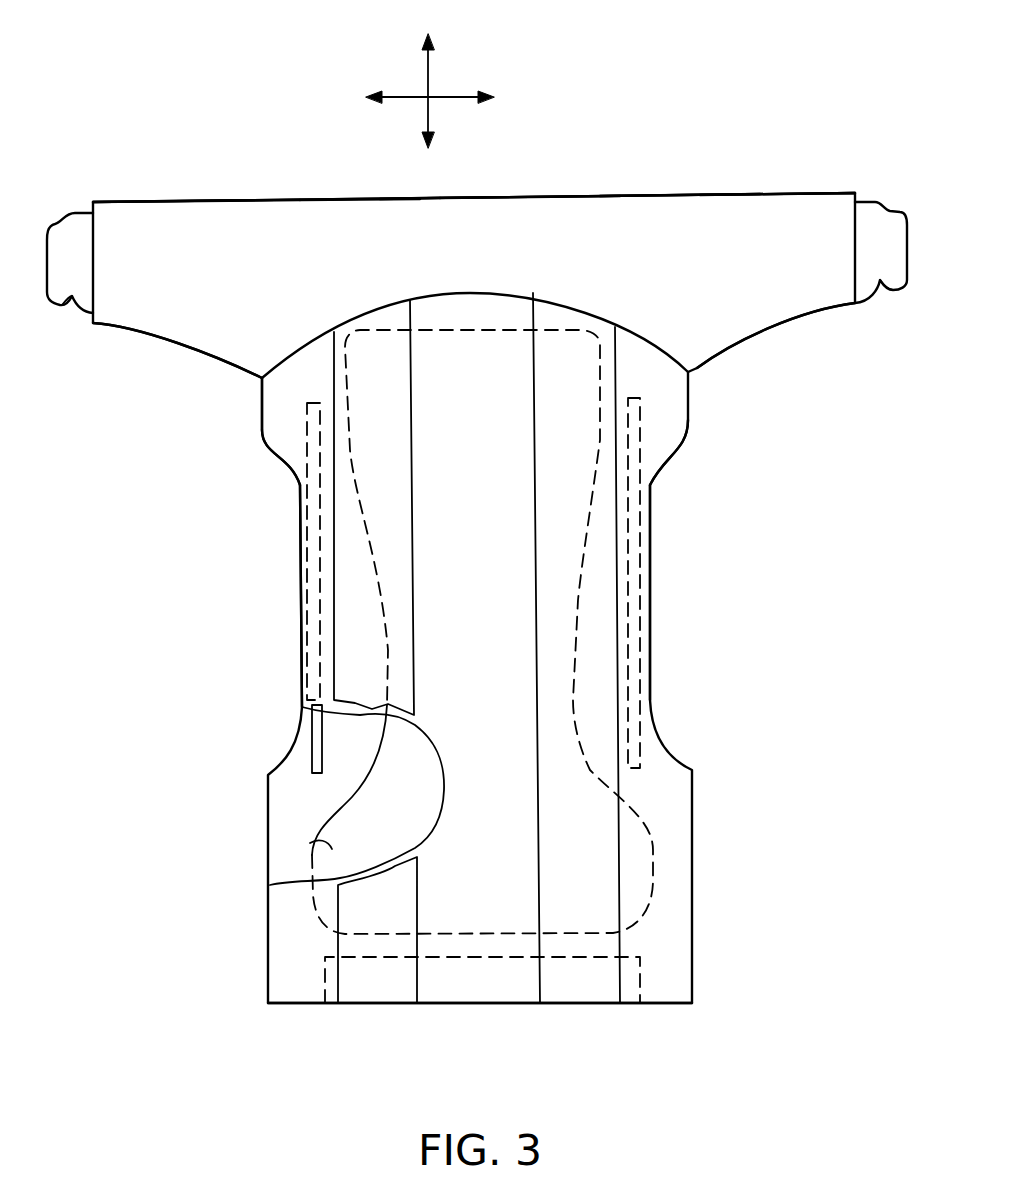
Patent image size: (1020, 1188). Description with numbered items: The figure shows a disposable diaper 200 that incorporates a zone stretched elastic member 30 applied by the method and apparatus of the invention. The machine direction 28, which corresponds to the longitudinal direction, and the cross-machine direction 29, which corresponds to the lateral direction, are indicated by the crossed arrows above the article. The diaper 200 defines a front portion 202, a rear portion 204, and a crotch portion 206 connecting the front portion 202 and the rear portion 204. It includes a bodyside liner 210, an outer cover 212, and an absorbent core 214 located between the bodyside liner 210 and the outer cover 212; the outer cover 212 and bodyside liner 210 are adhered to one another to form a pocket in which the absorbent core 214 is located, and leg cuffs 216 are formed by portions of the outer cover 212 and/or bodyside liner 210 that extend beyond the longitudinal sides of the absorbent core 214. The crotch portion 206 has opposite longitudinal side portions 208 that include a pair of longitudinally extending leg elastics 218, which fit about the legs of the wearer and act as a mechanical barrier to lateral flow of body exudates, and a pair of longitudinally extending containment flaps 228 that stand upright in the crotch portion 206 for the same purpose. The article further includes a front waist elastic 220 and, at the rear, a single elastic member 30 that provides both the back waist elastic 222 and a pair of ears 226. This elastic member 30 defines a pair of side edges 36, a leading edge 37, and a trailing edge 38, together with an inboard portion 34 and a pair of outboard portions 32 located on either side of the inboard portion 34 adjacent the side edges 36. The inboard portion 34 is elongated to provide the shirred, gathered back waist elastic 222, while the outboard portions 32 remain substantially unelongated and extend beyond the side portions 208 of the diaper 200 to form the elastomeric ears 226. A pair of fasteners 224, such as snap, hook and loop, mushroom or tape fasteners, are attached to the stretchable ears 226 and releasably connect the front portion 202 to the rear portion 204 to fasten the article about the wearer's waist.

The disposable diaper 200 is at (182, 146).
The machine direction 28 is at (430, 72).
The cross-machine direction 29 is at (450, 97).
The elastic member 30 is at (648, 210).
The outboard portions 32 is at (140, 200).
The inboard portion 34 is at (405, 205).
The side edges 36 is at (92, 205).
The leading edge 37 is at (315, 200).
The trailing edge 38 is at (290, 368).
The front portion 202 is at (236, 959).
The rear portion 204 is at (208, 407).
The crotch portion 206 is at (240, 631).
The longitudinal side portions 208 is at (300, 482).
The bodyside liner 210 is at (357, 713).
The outer cover 212 is at (292, 812).
The absorbent core 214 is at (312, 850).
The leg cuffs 216 is at (300, 556).
The leg elastics 218 is at (318, 730).
The front waist elastic 220 is at (394, 985).
The back waist elastic 222 is at (512, 213).
The fasteners 224 is at (68, 297).
The ears 226 is at (210, 217).
The containment flaps 228 is at (350, 946).